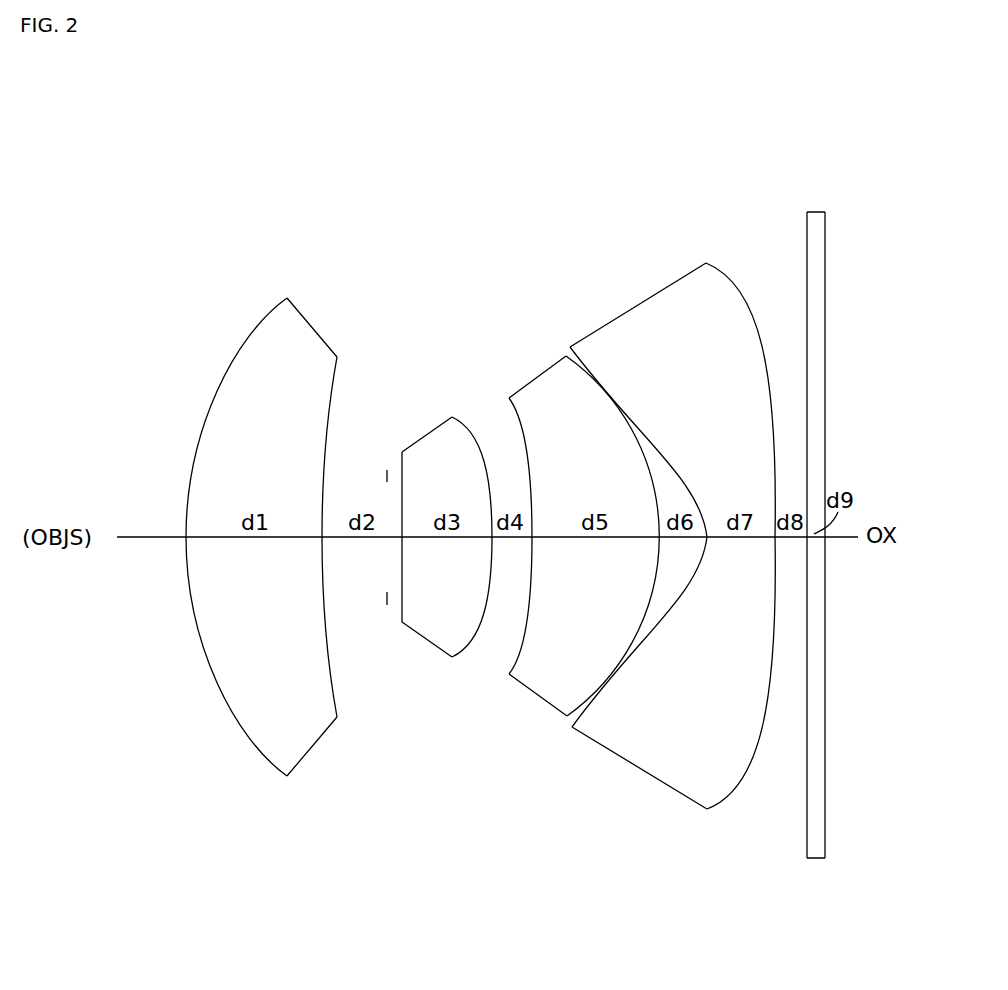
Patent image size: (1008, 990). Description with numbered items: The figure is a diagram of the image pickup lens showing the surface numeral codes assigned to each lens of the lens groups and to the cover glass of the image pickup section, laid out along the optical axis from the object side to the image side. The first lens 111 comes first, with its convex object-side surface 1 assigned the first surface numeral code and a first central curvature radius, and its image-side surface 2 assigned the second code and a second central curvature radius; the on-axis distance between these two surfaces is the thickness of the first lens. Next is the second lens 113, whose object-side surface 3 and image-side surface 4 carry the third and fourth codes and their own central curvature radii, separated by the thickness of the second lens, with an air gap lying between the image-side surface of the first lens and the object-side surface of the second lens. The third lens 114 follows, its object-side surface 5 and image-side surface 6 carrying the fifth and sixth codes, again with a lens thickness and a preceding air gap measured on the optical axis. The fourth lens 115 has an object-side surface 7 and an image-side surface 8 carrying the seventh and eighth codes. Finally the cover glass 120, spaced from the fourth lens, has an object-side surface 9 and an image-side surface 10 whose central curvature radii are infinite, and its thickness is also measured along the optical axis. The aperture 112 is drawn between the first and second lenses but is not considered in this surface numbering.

The object-side surface of the first lens 1 is at (233, 350).
The image-side surface of the first lens 2 is at (332, 387).
The object-side surface of the second lens 3 is at (390, 455).
The image-side surface of the second lens 4 is at (470, 497).
The object-side surface of the third lens 5 is at (520, 424).
The image-side surface of the third lens 6 is at (608, 469).
The object-side surface of the fourth lens 7 is at (638, 413).
The image-side surface of the fourth lens 8 is at (740, 488).
The object-side surface of the cover glass 9 is at (807, 245).
The image-side surface of the cover glass 10 is at (853, 488).
The first lens 111 is at (271, 535).
The aperture 112 is at (386, 612).
The second lens 113 is at (435, 530).
The third lens 114 is at (574, 498).
The fourth lens 115 is at (672, 504).
The cover glass 120 is at (825, 523).